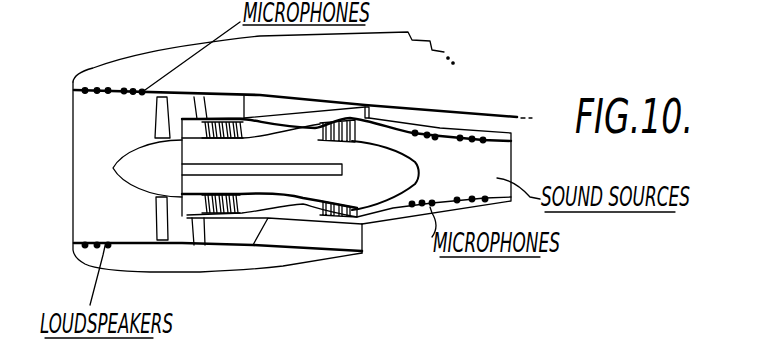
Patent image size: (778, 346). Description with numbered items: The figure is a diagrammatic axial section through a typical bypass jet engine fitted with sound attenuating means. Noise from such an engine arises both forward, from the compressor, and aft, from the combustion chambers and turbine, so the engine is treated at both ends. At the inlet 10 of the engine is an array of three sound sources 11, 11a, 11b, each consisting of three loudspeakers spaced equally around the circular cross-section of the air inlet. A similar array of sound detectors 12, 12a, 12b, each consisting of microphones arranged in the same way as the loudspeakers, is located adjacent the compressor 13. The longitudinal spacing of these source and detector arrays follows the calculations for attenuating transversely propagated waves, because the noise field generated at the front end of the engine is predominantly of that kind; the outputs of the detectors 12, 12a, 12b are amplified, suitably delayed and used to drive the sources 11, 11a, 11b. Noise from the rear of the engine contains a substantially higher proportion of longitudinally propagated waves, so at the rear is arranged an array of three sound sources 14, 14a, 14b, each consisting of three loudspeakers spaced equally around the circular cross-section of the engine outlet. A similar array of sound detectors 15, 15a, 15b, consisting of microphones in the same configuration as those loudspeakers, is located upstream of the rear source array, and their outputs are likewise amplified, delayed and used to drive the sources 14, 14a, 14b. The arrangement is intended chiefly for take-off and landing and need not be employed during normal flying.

The inlet 10 is at (98, 256).
The sound source 11 is at (84, 93).
The sound source 11a is at (97, 93).
The sound source 11b is at (108, 93).
The sound detector 12 is at (124, 88).
The sound detector 12a is at (133, 88).
The sound detector 12b is at (146, 89).
The compressor 13 is at (228, 210).
The sound source 14 is at (459, 136).
The sound source 14a is at (482, 138).
The sound source 14b is at (487, 141).
The sound detector 15 is at (413, 132).
The sound detector 15a is at (426, 133).
The sound detector 15b is at (435, 135).